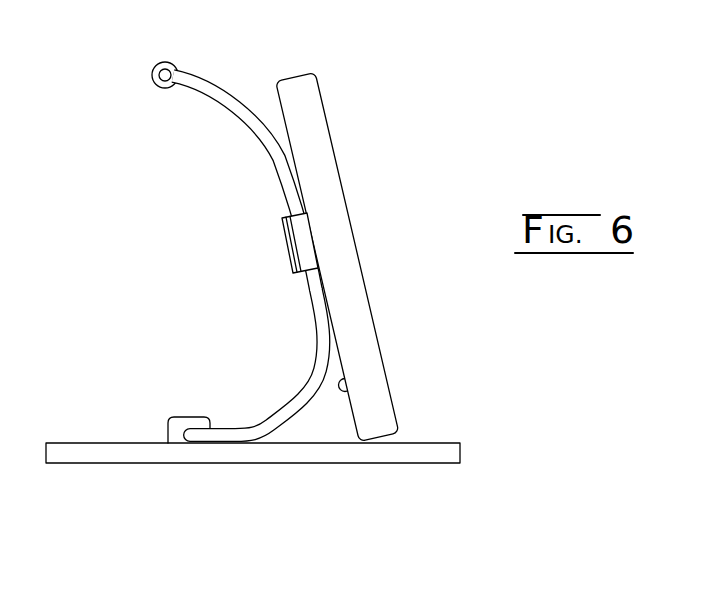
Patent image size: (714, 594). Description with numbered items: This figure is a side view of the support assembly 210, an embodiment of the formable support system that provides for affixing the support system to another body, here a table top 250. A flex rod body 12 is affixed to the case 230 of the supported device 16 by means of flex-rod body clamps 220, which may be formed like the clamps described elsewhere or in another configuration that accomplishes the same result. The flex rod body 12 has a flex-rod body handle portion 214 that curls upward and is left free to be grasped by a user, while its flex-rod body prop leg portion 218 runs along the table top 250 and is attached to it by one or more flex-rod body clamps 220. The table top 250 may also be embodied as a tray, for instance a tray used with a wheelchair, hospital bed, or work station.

The assembly 210 is at (245, 235).
The support arm 12 is at (238, 68).
The flex-rod body handle portion 214 is at (152, 56).
The tablet device 16 is at (356, 181).
The flex-rod body prop leg portion 218 is at (268, 398).
The flex-rod body clamp 220 is at (284, 243).
The case 230 is at (349, 388).
The table top 250 is at (98, 443).